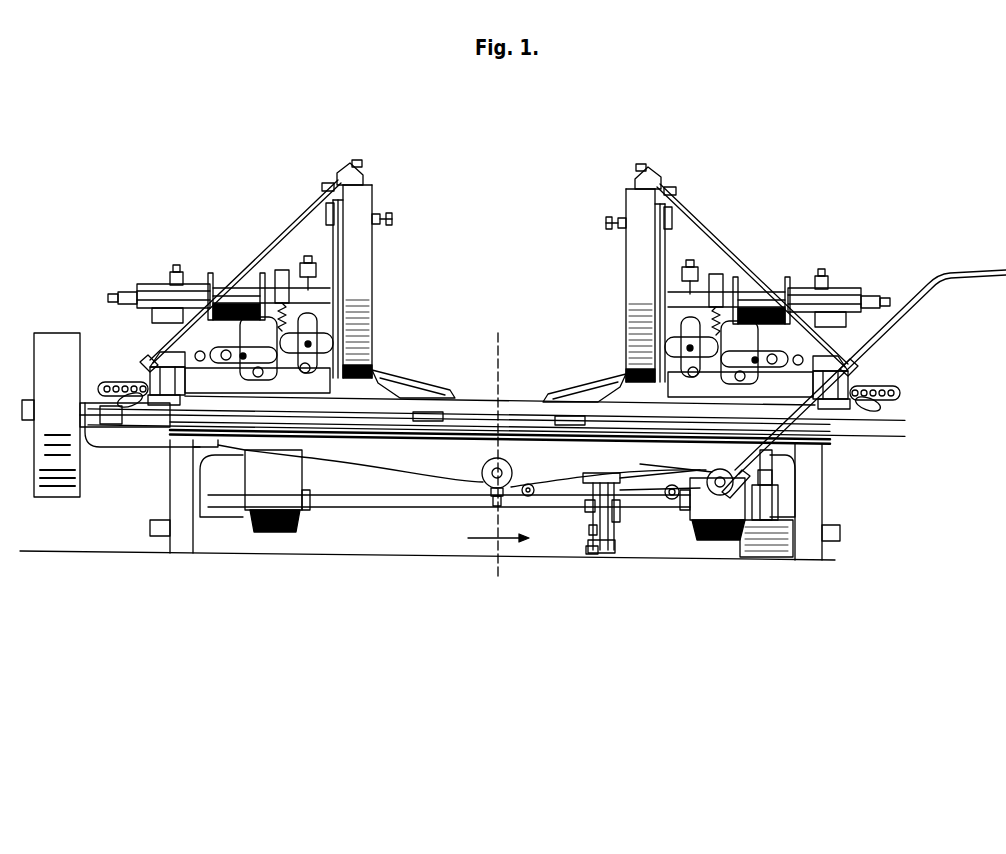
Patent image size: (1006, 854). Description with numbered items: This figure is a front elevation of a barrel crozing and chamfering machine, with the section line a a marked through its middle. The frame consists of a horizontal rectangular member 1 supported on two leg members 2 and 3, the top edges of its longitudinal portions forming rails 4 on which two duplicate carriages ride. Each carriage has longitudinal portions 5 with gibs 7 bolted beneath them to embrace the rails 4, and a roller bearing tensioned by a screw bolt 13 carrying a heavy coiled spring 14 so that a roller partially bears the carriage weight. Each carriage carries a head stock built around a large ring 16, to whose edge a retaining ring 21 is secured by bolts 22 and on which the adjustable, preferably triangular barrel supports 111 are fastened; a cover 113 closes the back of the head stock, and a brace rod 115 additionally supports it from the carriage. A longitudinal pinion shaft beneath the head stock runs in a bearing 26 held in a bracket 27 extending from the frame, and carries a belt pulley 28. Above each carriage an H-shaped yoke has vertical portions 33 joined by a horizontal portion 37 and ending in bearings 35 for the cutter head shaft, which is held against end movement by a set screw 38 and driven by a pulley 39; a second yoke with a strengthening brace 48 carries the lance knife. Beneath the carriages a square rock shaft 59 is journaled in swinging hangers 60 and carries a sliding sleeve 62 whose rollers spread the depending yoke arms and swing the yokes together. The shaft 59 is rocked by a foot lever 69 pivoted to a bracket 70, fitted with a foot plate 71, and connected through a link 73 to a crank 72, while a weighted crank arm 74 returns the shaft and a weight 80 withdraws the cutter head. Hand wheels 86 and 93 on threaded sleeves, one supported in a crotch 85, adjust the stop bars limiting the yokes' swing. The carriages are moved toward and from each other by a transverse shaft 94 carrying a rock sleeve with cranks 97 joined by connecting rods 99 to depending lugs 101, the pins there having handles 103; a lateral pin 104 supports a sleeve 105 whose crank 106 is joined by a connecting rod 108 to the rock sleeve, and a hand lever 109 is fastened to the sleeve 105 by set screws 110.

The rectangular frame member 1 is at (496, 429).
The leg member 2 is at (171, 496).
The leg member 3 is at (817, 502).
The rails 4 is at (380, 399).
The longitudinal portions of carriage 5 is at (499, 380).
The gibs 7 is at (239, 398).
The screw bolt 13 is at (281, 292).
The coiled spring 14 is at (499, 298).
The large ring 16 is at (499, 271).
The retaining ring 21 is at (365, 290).
The bolts 22 is at (392, 220).
The bearing 26 is at (87, 403).
The bracket 27 is at (142, 425).
The pulley 28 is at (96, 415).
The vertical portions of yoke 33 is at (494, 356).
The bearings 35 is at (172, 284).
The horizontal portion of yoke 37 is at (503, 350).
The set screw 38 is at (504, 297).
The pulley 39 is at (499, 312).
The strengthening brace 48 is at (162, 352).
The rock shaft 59 is at (449, 510).
The swinging hangers 60 is at (200, 483).
The sliding sleeve 62 is at (306, 496).
The foot lever 69 is at (608, 516).
The bracket 70 is at (588, 550).
The foot plate 71 is at (588, 476).
The crank 72 is at (588, 506).
The link 73 is at (590, 531).
The weighted crank arm 74 is at (764, 497).
The weight 80 is at (481, 492).
The crotch 85 is at (499, 368).
The hand wheel 86 is at (499, 345).
The hand wheel 93 is at (493, 355).
The transverse shaft 94 is at (506, 471).
The crank 97 is at (505, 501).
The connecting rod 99 is at (545, 490).
The depending lugs 101 is at (170, 401).
The handle 103 is at (504, 409).
The laterally extending pin 104 is at (717, 474).
The sleeve 105 is at (734, 470).
The crank 106 is at (688, 468).
The connecting rod 108 is at (657, 484).
The hand lever 109 is at (884, 343).
The set screws 110 is at (740, 541).
The adjustable barrel supports 111 is at (499, 378).
The cover 113 is at (328, 218).
The brace rod 115 is at (499, 278).
The section line a a is at (495, 453).